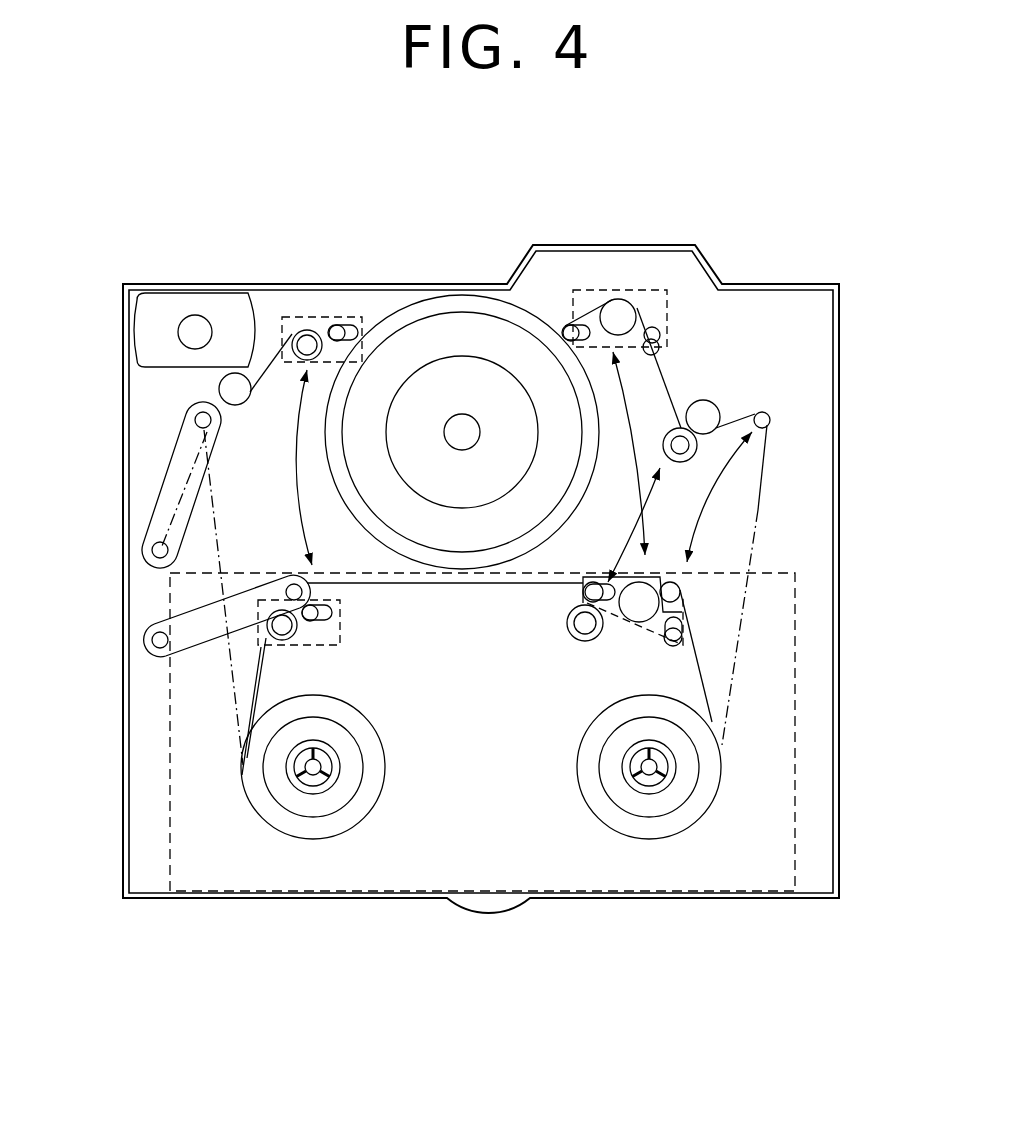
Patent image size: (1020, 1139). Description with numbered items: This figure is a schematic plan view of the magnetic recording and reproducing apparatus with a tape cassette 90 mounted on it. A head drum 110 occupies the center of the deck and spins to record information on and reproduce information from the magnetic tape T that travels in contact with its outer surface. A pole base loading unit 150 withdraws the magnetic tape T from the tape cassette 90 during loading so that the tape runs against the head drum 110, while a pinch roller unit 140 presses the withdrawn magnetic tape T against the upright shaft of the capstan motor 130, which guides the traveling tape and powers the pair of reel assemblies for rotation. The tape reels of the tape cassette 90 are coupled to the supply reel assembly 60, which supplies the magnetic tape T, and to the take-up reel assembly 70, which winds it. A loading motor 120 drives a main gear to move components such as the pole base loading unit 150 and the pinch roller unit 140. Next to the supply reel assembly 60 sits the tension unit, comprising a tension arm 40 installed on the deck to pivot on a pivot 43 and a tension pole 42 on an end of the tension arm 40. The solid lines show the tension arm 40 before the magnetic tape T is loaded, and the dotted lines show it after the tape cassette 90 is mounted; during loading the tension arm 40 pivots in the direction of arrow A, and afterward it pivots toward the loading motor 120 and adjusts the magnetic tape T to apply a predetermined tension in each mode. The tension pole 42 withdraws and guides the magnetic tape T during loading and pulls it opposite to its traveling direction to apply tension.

The tension arm 40 is at (193, 640).
The tension pole 42 is at (290, 578).
The pivot 43 is at (155, 640).
The supply reel assembly 60 is at (318, 842).
The take-up reel assembly 70 is at (658, 845).
The tape cassette 90 is at (797, 703).
The head drum 110 is at (445, 335).
The loading motor 120 is at (153, 330).
The capstan motor 130 is at (718, 395).
The pinch roller unit 140 is at (680, 445).
The pole base loading unit 150 is at (320, 315).
The magnetic tape T is at (760, 510).
The arrow A is at (216, 434).